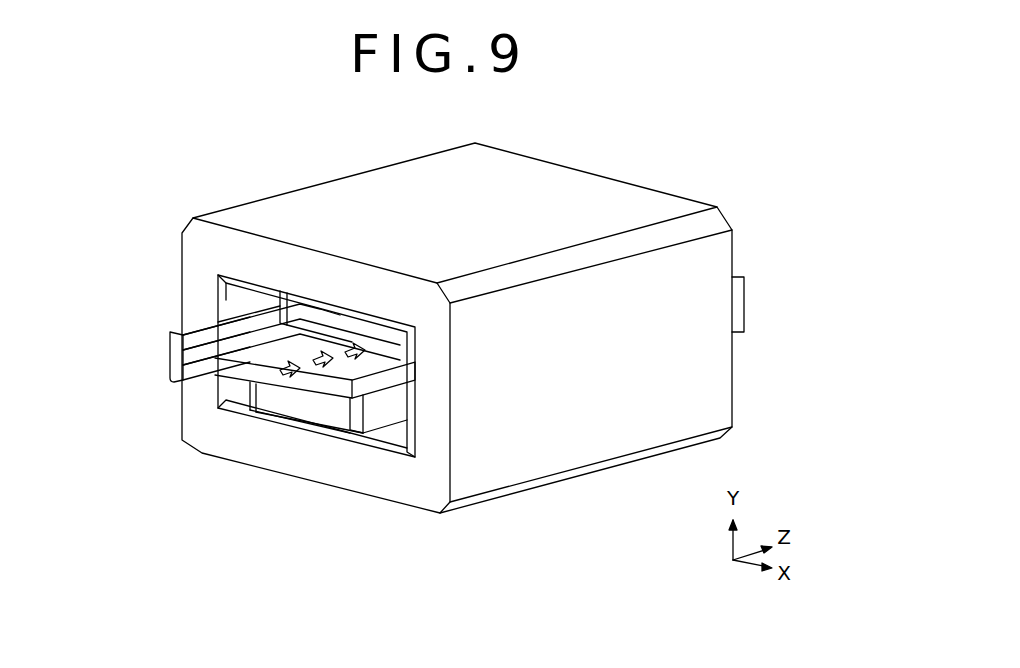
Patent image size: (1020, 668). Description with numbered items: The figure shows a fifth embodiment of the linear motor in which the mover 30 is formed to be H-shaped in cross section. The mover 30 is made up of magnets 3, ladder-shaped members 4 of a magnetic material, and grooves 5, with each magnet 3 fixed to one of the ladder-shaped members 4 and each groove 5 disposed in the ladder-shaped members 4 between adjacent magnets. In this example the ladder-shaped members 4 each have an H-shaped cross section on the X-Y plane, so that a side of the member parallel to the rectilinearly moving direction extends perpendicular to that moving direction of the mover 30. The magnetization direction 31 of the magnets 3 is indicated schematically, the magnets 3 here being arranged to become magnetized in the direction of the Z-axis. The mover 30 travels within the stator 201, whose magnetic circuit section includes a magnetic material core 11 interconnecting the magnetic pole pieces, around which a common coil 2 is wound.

The coil 2 is at (367, 327).
The magnets 3 is at (260, 350).
The ladder-shaped members of a magnetic material 4 is at (188, 358).
The grooves 5 is at (242, 353).
The magnetic material core 11 is at (570, 453).
The mover 30 is at (238, 360).
The magnetization direction 31 is at (352, 343).
The stator 201 is at (693, 563).